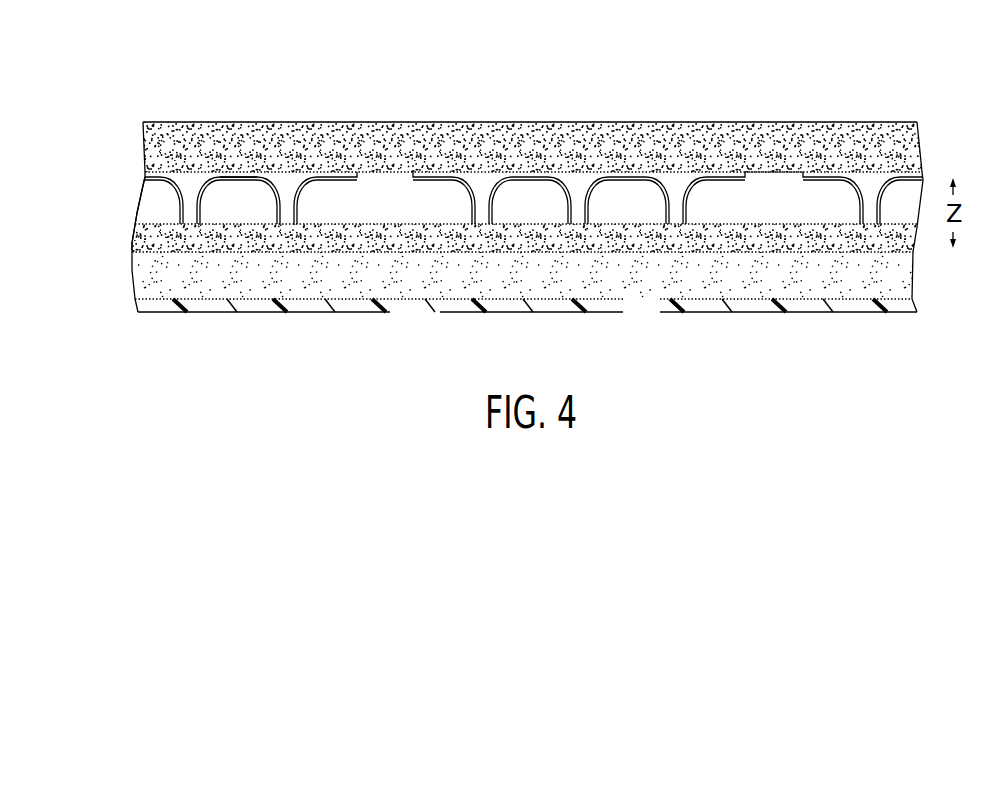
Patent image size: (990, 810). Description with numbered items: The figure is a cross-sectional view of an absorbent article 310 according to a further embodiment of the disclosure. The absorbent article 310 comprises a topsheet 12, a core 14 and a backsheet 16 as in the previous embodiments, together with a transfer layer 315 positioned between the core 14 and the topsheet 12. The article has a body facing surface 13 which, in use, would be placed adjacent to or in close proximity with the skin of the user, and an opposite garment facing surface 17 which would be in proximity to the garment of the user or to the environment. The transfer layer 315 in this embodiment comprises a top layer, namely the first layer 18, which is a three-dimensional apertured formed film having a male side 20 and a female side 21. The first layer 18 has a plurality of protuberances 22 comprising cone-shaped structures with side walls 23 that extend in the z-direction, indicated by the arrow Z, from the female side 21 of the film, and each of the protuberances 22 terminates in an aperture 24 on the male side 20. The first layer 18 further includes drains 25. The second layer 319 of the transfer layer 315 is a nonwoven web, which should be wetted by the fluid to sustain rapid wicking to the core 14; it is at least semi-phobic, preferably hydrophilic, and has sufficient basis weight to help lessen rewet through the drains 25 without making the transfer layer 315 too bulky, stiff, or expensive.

The absorbent article 310 is at (452, 78).
The topsheet 12 is at (332, 123).
The body facing surface 13 is at (392, 115).
The first layer 18 is at (443, 165).
The female side 21 is at (225, 165).
The male side 20 is at (292, 234).
The side walls 23 is at (572, 178).
The aperture 24 is at (579, 216).
The protuberances 22 is at (690, 188).
The drains 25 is at (774, 176).
The second layer 319 is at (155, 242).
The transfer layer 315 is at (124, 165).
The core 14 is at (172, 300).
The backsheet 16 is at (221, 304).
The garment facing surface 17 is at (262, 320).